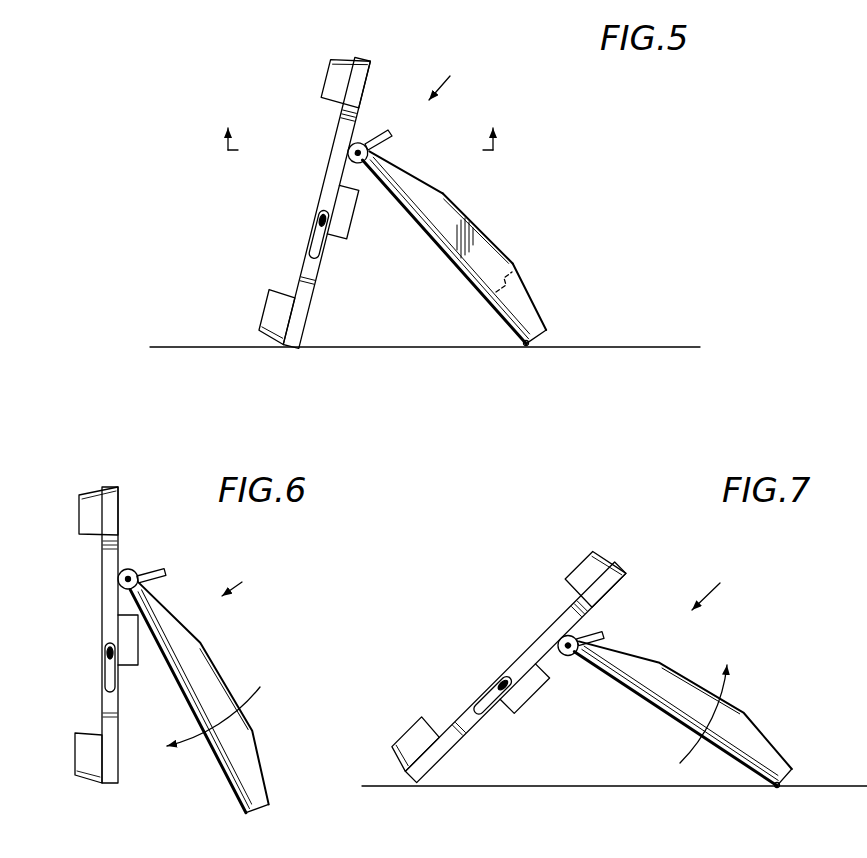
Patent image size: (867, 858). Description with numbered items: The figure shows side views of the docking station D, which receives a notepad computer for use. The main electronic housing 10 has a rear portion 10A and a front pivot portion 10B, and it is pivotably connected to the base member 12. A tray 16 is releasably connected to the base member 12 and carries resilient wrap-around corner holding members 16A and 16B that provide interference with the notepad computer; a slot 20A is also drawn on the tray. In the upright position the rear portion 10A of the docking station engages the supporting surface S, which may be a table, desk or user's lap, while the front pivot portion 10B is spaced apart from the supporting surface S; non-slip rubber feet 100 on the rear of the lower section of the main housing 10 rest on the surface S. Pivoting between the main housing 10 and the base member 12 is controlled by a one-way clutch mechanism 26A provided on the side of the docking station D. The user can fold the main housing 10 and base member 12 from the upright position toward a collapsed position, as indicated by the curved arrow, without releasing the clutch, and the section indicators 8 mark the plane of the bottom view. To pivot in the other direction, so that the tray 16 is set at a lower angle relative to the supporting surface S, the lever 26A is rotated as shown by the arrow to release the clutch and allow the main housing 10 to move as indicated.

In FIG. 5, the main electronic housing 10 is at (484, 235).
In FIG. 6, the main electronic housing 10 is at (212, 686).
In FIG. 7, the main electronic housing 10 is at (681, 678).
In FIG. 5, the rear portion 10A is at (508, 267).
In FIG. 5, the front pivot portion 10B is at (381, 163).
In FIG. 5, the base member 12 is at (351, 187).
In FIG. 6, the base member 12 is at (128, 660).
In FIG. 7, the base member 12 is at (550, 682).
In FIG. 7, the tray 16 is at (468, 720).
In FIG. 5, the resilient wrap around corner holding member 16A is at (351, 55).
In FIG. 6, the resilient wrap around corner holding member 16A is at (100, 487).
In FIG. 7, the resilient wrap around corner holding member 16A is at (594, 557).
In FIG. 5, the resilient wrap around corner holding member 16B is at (294, 317).
In FIG. 6, the resilient wrap around corner holding member 16B is at (98, 771).
In FIG. 7, the resilient wrap around corner holding member 16B is at (418, 743).
In FIG. 5, the slot 20A is at (311, 232).
In FIG. 6, the slot 20A is at (103, 655).
In FIG. 7, the slot 20A is at (490, 685).
In FIG. 5, the one way clutch mechanism 26A is at (371, 142).
In FIG. 6, the one way clutch mechanism 26A is at (132, 568).
In FIG. 7, the one way clutch mechanism 26A is at (590, 632).
In FIG. 5, the feet 100 is at (526, 349).
In FIG. 7, the feet 100 is at (774, 789).
In FIG. 5, the supporting surface S is at (645, 339).
In FIG. 7, the supporting surface S is at (838, 781).
In FIG. 5, the docking station D is at (448, 77).
In FIG. 6, the docking station D is at (241, 578).
In FIG. 7, the docking station D is at (716, 586).
In FIG. 5, the section line 8- 8 is at (360, 124).